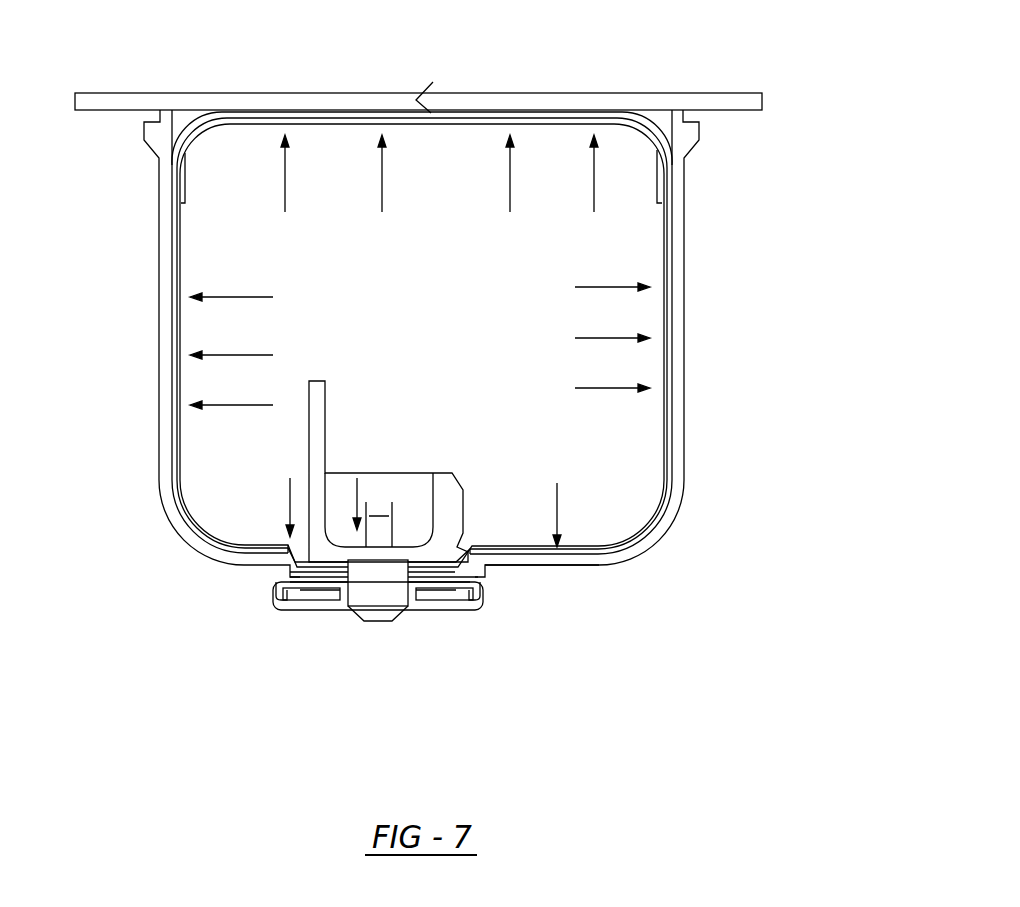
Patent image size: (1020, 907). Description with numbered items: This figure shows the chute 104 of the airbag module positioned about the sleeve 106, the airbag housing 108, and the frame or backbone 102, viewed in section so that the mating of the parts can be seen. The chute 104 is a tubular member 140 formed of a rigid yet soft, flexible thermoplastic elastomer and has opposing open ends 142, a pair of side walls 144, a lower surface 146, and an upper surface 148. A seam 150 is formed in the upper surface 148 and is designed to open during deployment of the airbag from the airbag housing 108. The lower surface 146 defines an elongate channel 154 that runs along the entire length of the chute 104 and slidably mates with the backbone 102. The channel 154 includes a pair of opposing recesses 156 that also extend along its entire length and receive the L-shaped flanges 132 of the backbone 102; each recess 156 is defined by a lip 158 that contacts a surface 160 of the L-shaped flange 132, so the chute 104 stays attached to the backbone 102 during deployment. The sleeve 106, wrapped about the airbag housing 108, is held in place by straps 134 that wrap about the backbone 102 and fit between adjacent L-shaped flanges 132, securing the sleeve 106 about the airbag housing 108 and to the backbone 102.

The frame or backbone 102 is at (470, 494).
The chute 104 is at (652, 548).
The sleeve or wrap 106 is at (663, 133).
The airbag housing 108 is at (448, 268).
The L-shaped flanges 132 is at (275, 600).
The straps 134 is at (294, 588).
The tubular member 140 is at (695, 386).
The opposing open ends 142 is at (665, 503).
The side walls 144 is at (165, 263).
The lower surface 146 is at (547, 573).
The upper surface 148 is at (603, 105).
The seam 150 is at (428, 92).
The elongate channel 154 is at (343, 604).
The opposing recesses 156 is at (273, 606).
The lip 158 is at (290, 553).
The surface 160 is at (270, 584).